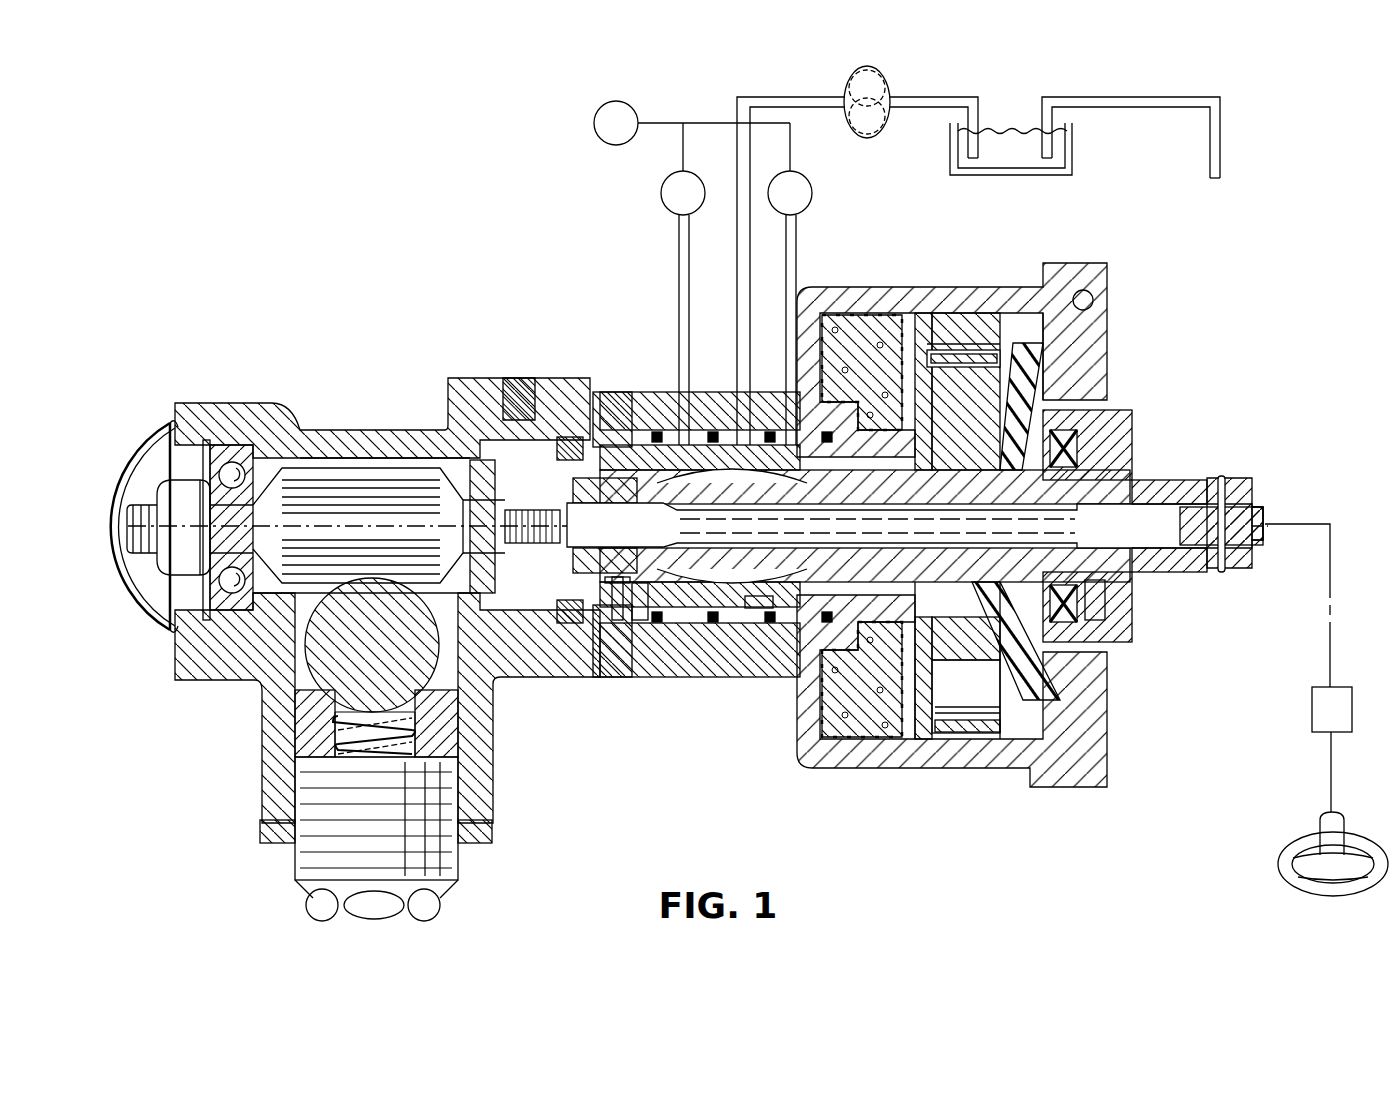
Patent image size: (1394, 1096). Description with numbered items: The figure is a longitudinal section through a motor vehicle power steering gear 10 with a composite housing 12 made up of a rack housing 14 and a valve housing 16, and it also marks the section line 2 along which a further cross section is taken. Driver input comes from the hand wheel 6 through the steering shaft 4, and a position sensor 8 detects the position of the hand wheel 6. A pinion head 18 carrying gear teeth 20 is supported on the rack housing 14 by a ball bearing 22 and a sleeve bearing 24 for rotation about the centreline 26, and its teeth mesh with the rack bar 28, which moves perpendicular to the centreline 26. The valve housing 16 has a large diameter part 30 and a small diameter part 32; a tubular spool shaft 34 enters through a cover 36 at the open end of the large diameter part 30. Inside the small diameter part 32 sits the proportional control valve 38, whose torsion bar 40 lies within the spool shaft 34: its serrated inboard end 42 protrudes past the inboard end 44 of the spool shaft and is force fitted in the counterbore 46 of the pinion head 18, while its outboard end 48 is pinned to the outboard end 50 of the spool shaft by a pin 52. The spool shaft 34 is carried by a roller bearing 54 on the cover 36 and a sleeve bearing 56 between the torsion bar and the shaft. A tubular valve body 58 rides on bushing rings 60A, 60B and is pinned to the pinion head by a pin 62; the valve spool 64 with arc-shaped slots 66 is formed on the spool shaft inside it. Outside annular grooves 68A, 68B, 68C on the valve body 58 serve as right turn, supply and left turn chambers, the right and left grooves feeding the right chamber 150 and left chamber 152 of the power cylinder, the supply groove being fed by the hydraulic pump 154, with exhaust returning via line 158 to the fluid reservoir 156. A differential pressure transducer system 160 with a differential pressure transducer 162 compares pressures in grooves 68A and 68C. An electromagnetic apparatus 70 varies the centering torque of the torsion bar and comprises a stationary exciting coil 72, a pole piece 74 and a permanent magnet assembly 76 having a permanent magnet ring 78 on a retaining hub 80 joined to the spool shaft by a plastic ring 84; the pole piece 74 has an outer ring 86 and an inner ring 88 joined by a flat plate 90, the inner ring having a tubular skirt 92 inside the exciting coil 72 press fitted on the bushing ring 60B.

The section line 2- 2 is at (1000, 213).
The steering shaft 4 is at (1332, 668).
The hand wheel 6 is at (1283, 858).
The position sensor 8 is at (1352, 720).
The power steering gear 10 is at (584, 312).
The composite housing 12 is at (519, 374).
The rack housing 14 is at (233, 396).
The valve housing 16 is at (736, 380).
The pinion head 18 is at (353, 478).
The gear teeth 20 is at (306, 468).
The ball bearing 22 is at (232, 592).
The sleeve bearing 24 is at (512, 394).
The centreline 26 is at (1136, 502).
The rack bar 28 is at (340, 662).
The large diameter part 30 is at (851, 286).
The small diameter part 32 is at (626, 392).
The spool shaft 34 is at (1210, 476).
The cover 36 is at (1120, 630).
The proportional control valve 38 is at (803, 640).
The torsion bar 40 is at (1176, 498).
The serrated inboard end 42 is at (541, 600).
The inboard end 44 is at (586, 600).
The counterbore 46 is at (563, 435).
The outboard end 48 is at (1132, 548).
The outboard end 50 is at (1259, 505).
The pin 52 is at (1223, 574).
The roller bearing 54 is at (1092, 620).
The sleeve bearing 56 is at (602, 395).
The valve body 58 is at (641, 622).
The bushing ring 60A is at (666, 440).
The bushing ring 60B is at (784, 440).
The pin 62 is at (616, 622).
The valve spool 64 is at (740, 612).
The arc-shaped slots 66 is at (735, 430).
The outside annular groove 68A is at (664, 628).
The outside annular groove 68B is at (765, 632).
The outside annular groove 68C is at (823, 628).
The electromagnetic apparatus 70 is at (1050, 338).
The exciting coil 72 is at (851, 726).
The pole piece 74 is at (954, 742).
The permanent magnet assembly 76 is at (1026, 318).
The permanent magnet ring 78 is at (985, 343).
The retaining hub 80 is at (1035, 390).
The plastic ring 84 is at (1090, 418).
The outer ring 86 is at (986, 742).
The inner ring 88 is at (940, 350).
The flat plate 90 is at (893, 318).
The tubular skirt 92 is at (918, 550).
The right chamber 150 is at (662, 186).
The left chamber 152 is at (812, 186).
The hydraulic pump 154 is at (891, 88).
The fluid reservoir 156 is at (1006, 128).
The line 158 is at (1221, 164).
The differential pressure transducer system 160 is at (556, 136).
The differential pressure transducer 162 is at (598, 108).